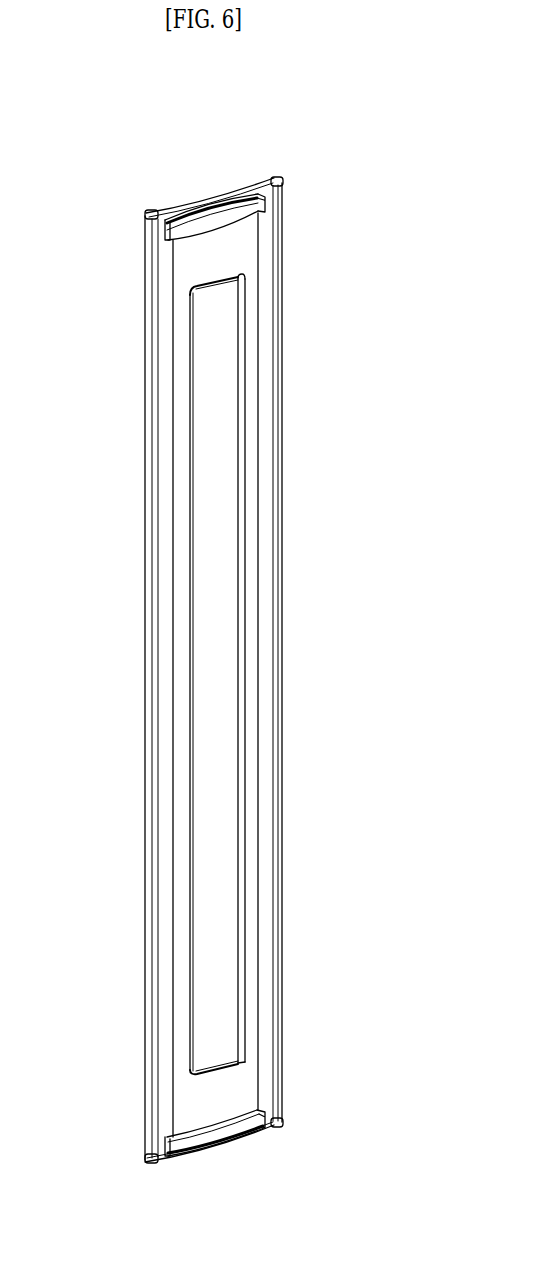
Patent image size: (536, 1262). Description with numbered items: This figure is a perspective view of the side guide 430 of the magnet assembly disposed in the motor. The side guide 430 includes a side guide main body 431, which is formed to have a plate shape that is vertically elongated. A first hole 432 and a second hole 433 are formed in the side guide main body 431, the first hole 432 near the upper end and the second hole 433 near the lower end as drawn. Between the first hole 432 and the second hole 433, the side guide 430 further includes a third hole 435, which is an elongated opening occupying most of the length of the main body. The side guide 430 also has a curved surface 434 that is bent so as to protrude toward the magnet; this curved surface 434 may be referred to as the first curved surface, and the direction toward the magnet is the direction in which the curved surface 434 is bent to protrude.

The side guide 430 is at (93, 105).
The side guide main body 431 is at (153, 571).
The first hole 432 is at (226, 204).
The second hole 433 is at (209, 1133).
The curved surface 434 is at (225, 252).
The third hole 435 is at (213, 390).